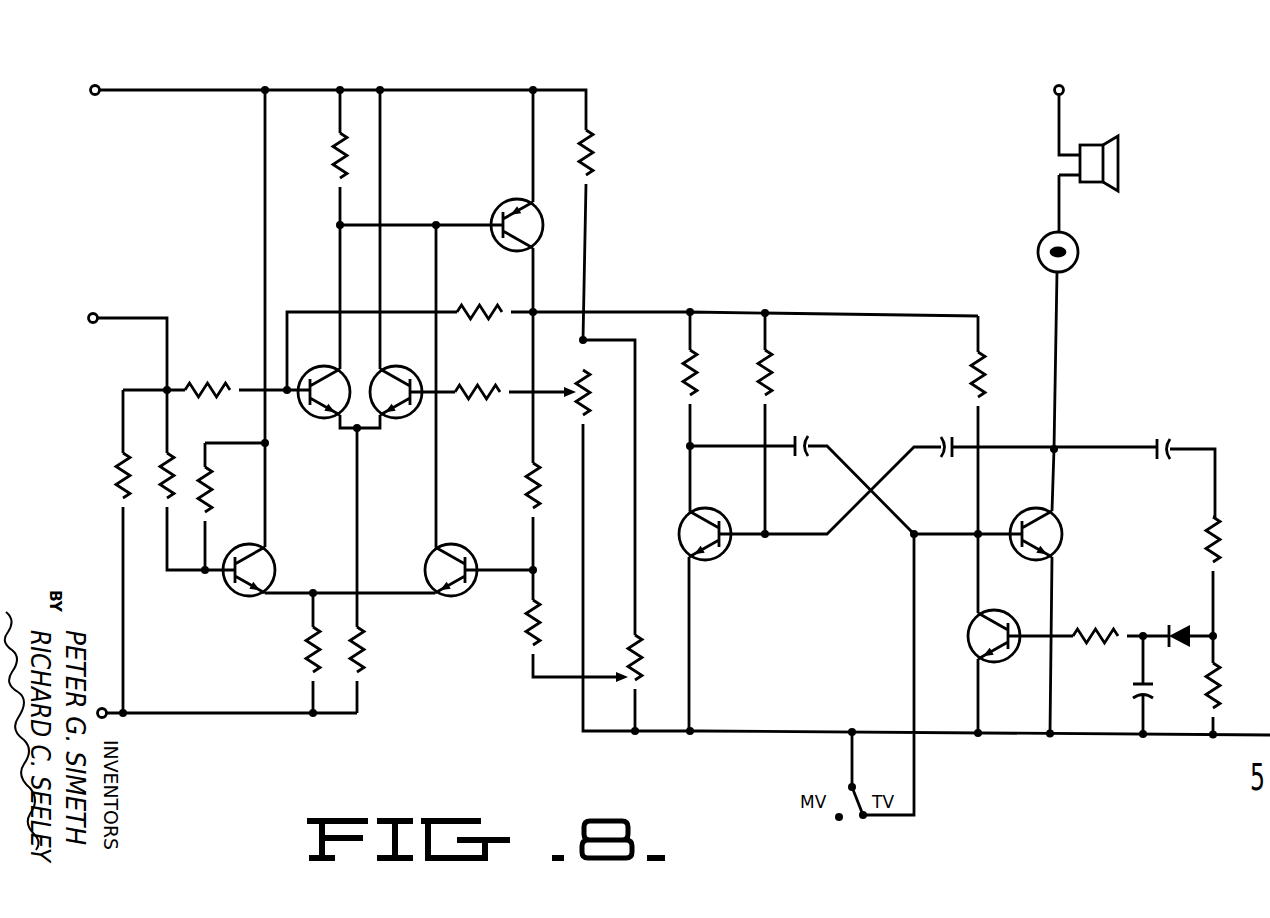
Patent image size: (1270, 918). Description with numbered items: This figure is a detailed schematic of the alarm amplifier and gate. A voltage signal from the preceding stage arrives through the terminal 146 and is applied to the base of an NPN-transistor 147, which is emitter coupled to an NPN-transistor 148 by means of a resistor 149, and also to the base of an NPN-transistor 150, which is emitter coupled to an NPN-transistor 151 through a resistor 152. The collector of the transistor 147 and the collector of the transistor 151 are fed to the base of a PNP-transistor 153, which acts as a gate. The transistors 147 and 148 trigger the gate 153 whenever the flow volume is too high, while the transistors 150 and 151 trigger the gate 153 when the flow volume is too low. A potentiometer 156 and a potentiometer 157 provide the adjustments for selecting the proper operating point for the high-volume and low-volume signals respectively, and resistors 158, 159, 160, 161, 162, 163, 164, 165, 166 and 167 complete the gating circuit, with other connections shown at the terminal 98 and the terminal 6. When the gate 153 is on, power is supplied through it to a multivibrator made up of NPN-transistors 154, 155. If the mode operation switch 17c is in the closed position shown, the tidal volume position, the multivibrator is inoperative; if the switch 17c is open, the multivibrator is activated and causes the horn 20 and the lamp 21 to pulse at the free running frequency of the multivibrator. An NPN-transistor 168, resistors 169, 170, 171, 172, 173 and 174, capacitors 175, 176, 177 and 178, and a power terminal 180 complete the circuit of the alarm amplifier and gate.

The input terminal 98 is at (77, 92).
The terminal 146 is at (92, 312).
The terminal 6 is at (110, 718).
The power terminal 180 is at (1070, 90).
The horn 20 is at (1120, 160).
The lamp 21 is at (1080, 248).
The NPN-transistor 147 is at (324, 374).
The NPN-transistor 148 is at (398, 374).
The resistor 149 is at (366, 660).
The NPN-transistor 150 is at (243, 592).
The NPN-transistor 151 is at (446, 598).
The resistor 152 is at (311, 656).
The PNP-transistor 153 is at (536, 236).
The NPN-transistor 154 is at (709, 586).
The NPN-transistor 155 is at (1062, 526).
The potentiometer 156 is at (589, 412).
The potentiometer 157 is at (639, 660).
The resistor 158 is at (122, 485).
The resistor 159 is at (174, 470).
The resistor 160 is at (215, 494).
The resistor 161 is at (236, 388).
The resistor 162 is at (336, 176).
The resistor 163 is at (497, 306).
The resistor 164 is at (497, 402).
The resistor 165 is at (593, 155).
The resistor 166 is at (529, 497).
The resistor 167 is at (529, 648).
The NPN-transistor 168 is at (981, 668).
The resistor 169 is at (712, 369).
The resistor 170 is at (772, 372).
The resistor 171 is at (997, 362).
The resistor 172 is at (1220, 525).
The resistor 173 is at (1076, 634).
The resistor 174 is at (1193, 620).
The capacitor 175 is at (805, 436).
The capacitor 176 is at (952, 427).
The capacitor 177 is at (1178, 420).
The capacitor 178 is at (1136, 688).
The mode operation switch 17c is at (862, 823).